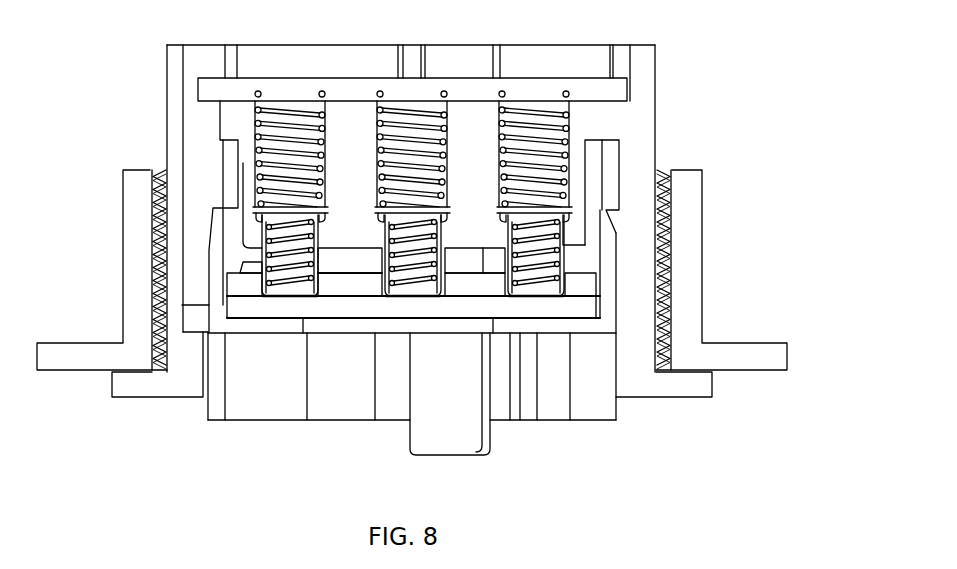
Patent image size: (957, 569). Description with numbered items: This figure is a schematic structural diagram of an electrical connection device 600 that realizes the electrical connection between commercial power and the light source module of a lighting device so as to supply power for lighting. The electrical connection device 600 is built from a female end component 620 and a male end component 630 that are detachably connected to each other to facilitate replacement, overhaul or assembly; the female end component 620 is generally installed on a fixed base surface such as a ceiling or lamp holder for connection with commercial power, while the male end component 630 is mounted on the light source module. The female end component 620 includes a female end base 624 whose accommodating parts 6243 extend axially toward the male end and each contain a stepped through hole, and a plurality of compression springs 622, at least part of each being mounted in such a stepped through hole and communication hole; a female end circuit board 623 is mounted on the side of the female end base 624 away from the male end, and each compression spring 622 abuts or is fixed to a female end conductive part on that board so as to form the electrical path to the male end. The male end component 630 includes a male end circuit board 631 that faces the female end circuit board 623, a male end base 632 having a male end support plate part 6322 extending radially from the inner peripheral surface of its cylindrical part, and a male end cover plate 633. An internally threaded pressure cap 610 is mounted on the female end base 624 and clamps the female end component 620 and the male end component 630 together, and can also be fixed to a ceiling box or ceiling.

The electrical connection device 600 is at (279, 20).
The pressure cap 610 is at (133, 257).
The female end component 620 is at (670, 100).
The compression springs 622 is at (268, 128).
The female end circuit board 623 is at (207, 88).
The female end base 624 is at (637, 155).
The accommodating parts 6243 is at (243, 172).
The male end component 630 is at (578, 434).
The male end circuit board 631 is at (278, 307).
The male end base 632 is at (215, 402).
The male end cover plate 633 is at (348, 287).
The male end support plate part 6322 is at (397, 325).